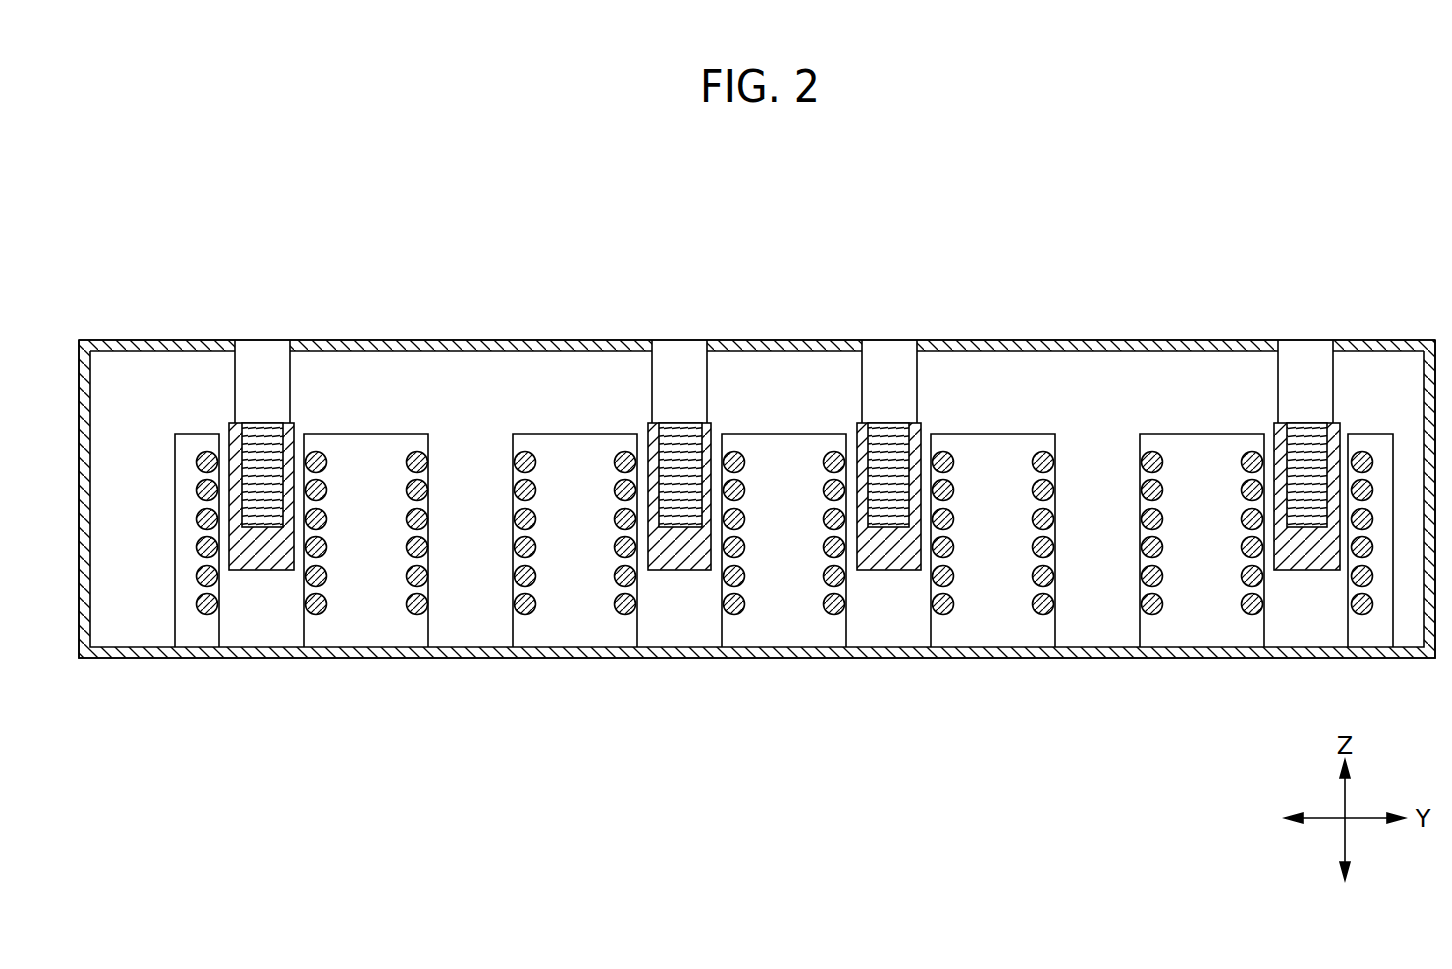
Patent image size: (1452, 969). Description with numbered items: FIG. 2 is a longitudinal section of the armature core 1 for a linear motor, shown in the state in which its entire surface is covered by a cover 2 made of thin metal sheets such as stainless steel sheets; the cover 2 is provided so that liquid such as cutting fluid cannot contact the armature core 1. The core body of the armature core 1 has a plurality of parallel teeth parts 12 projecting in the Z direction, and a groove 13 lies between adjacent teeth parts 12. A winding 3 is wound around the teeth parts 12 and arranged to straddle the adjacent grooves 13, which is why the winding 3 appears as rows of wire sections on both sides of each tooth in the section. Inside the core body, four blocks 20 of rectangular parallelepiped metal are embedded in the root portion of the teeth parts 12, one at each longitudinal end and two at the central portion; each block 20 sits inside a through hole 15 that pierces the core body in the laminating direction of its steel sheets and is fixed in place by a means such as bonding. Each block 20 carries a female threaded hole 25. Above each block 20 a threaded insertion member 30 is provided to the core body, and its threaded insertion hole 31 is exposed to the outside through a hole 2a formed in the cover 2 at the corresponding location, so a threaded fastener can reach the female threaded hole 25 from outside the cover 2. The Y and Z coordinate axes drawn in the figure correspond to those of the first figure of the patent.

The armature core 1 is at (1082, 338).
The cover 2 is at (455, 338).
The hole 2a is at (236, 350).
The winding 3 is at (536, 608).
The teeth part 12 is at (258, 618).
The groove 13 is at (363, 605).
The through hole 15 is at (248, 567).
The block 20 is at (278, 572).
The female threaded hole 25 is at (263, 440).
The threaded insertion member 30 is at (231, 394).
The threaded insertion hole 31 is at (680, 363).